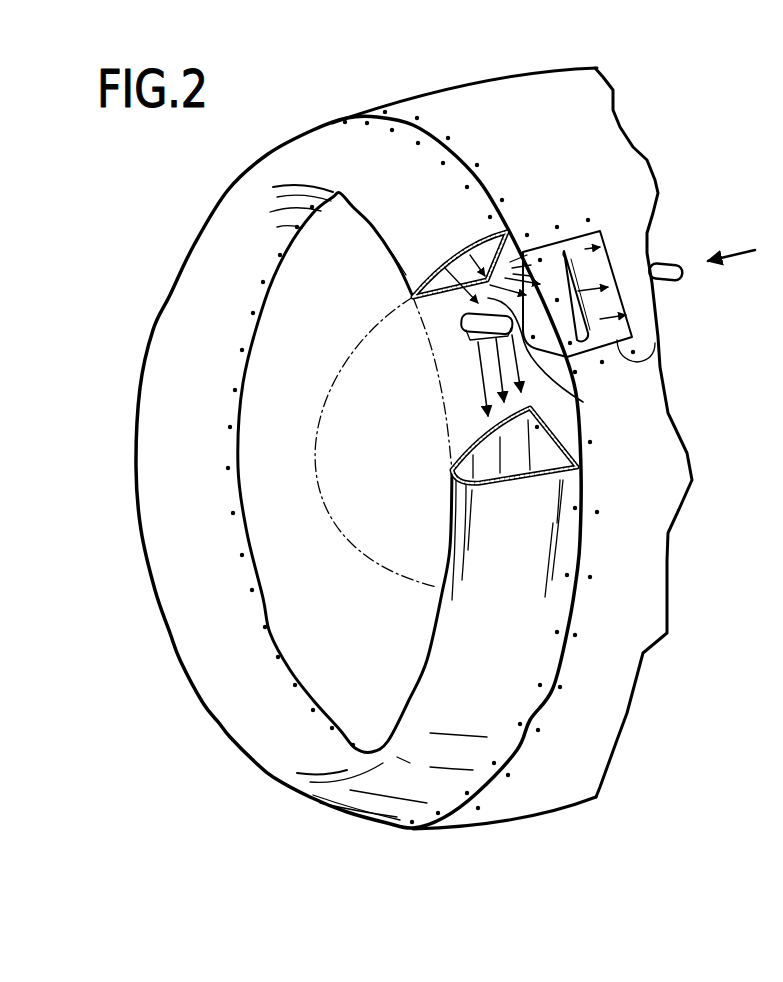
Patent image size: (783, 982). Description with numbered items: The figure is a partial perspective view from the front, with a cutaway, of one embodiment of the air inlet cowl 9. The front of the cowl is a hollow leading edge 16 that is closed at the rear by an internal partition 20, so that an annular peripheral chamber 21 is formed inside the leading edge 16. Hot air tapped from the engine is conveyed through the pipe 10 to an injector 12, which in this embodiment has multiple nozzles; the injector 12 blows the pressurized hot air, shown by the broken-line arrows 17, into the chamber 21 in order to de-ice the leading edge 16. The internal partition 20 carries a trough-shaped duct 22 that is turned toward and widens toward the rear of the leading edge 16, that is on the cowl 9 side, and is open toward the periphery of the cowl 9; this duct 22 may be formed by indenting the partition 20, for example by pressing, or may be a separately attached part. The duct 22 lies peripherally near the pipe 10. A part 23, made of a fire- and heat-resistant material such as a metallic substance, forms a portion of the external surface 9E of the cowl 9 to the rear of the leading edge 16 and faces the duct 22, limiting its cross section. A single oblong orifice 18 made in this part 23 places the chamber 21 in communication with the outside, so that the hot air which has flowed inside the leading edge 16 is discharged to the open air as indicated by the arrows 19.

The air inlet cowl 9 is at (410, 116).
The external surface of the cowl 9E is at (493, 104).
The pipe 10 is at (673, 265).
The injector 12 is at (460, 319).
The leading edge 16 is at (180, 292).
The broken-line arrows 17 is at (470, 375).
The single oblong orifice 18 is at (571, 248).
The arrows 19 is at (657, 352).
The internal partition 20 is at (560, 423).
The annular peripheral chamber 21 is at (513, 466).
The trough-shaped duct 22 is at (583, 402).
The part 23 is at (603, 263).